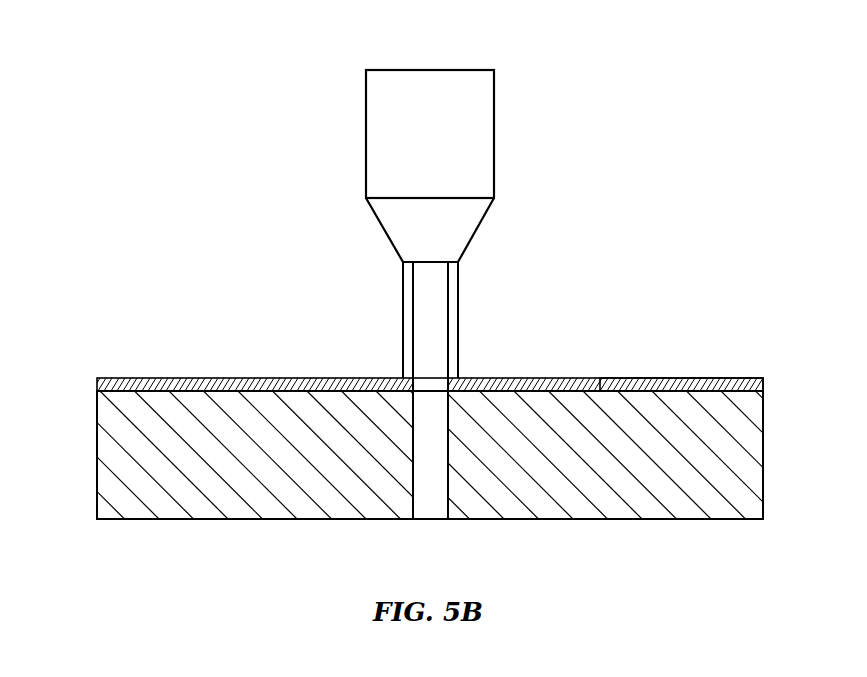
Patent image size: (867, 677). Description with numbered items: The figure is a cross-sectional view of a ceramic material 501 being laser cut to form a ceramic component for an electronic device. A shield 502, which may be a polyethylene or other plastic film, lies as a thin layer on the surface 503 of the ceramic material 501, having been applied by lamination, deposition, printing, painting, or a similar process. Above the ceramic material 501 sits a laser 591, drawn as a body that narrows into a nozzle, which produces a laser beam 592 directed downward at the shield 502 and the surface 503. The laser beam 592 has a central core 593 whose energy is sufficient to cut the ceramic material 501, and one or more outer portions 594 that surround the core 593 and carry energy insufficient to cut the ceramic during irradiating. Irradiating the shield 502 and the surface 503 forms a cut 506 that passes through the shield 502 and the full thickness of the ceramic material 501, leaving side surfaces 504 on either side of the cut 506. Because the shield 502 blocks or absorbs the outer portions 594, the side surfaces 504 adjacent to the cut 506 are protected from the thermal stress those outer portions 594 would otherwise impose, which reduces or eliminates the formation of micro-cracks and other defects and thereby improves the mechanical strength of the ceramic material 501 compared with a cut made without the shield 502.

The ceramic material 501 is at (96, 458).
The shield 502 is at (96, 386).
The surface 503 is at (690, 386).
The side surfaces 504 is at (411, 506).
The cut 506 is at (434, 520).
The laser 591 is at (494, 137).
The laser beam 592 is at (470, 351).
The core 593 is at (449, 308).
The outer portions 594 is at (402, 285).